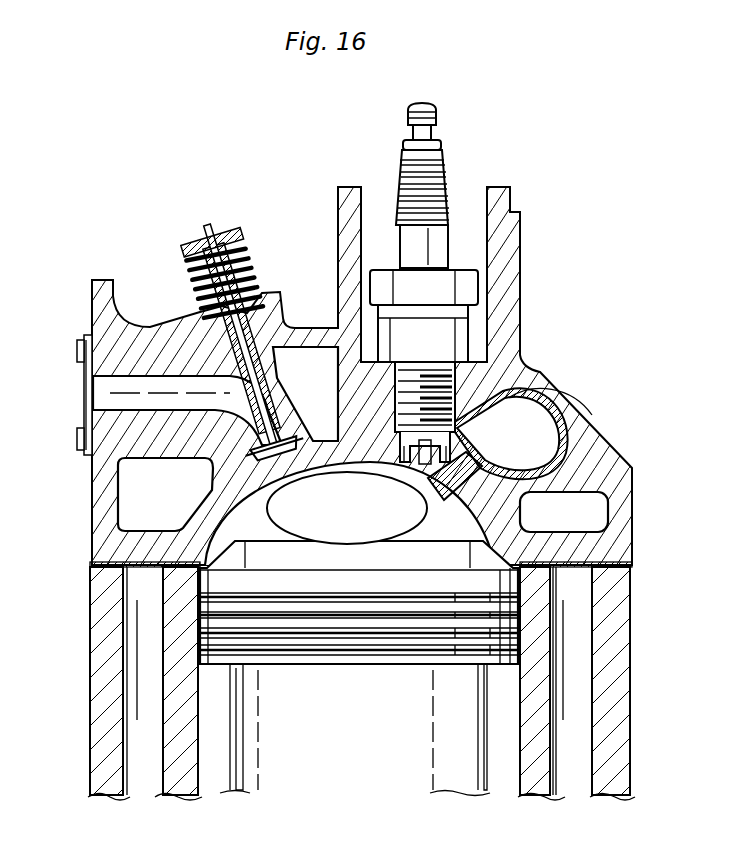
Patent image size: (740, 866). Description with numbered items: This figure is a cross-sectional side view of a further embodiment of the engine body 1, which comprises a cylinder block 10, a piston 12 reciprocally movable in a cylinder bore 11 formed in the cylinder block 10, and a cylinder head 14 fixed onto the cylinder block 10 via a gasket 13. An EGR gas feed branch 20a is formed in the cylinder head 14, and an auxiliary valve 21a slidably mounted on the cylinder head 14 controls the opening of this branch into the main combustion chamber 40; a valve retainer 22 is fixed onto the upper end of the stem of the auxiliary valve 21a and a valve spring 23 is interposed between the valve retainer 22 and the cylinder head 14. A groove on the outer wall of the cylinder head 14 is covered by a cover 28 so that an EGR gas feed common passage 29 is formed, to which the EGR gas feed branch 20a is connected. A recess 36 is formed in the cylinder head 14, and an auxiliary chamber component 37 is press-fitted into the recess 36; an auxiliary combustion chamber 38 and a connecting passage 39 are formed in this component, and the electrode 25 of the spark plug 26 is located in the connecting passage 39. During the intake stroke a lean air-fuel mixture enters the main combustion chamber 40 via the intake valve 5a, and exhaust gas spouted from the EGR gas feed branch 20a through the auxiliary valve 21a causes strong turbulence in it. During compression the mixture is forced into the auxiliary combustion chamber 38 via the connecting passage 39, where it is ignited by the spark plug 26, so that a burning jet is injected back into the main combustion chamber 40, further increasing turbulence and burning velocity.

The engine body 1 is at (649, 514).
The intake valve 5a is at (310, 533).
The cylinder block 10 is at (618, 684).
The cylinder bore 11 is at (518, 735).
The piston 12 is at (450, 797).
The gasket 13 is at (634, 564).
The cylinder head 14 is at (280, 326).
The EGR gas feed branch 20a is at (143, 370).
The auxiliary valve 21a is at (190, 340).
The valve retainer 22 is at (213, 232).
The valve spring 23 is at (233, 272).
The electrode 25 is at (462, 395).
The spark plug 26 is at (448, 242).
The cover 28 is at (80, 350).
The EGR gas feed common passage 29 is at (95, 400).
The recess 36 is at (556, 474).
The auxiliary chamber component 37 is at (588, 410).
The auxiliary combustion chamber 38 is at (520, 444).
The connecting passage 39 is at (430, 482).
The main combustion chamber 40 is at (463, 530).